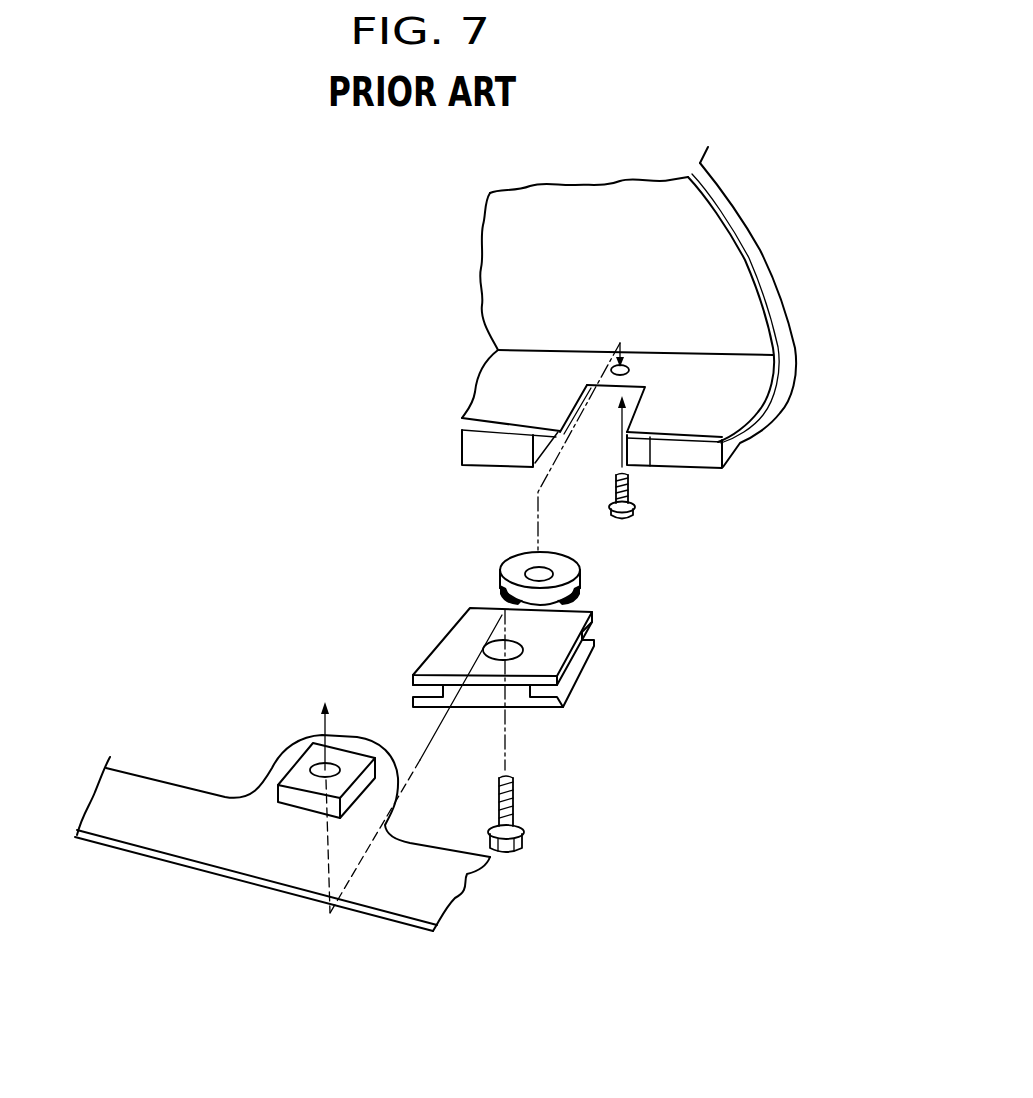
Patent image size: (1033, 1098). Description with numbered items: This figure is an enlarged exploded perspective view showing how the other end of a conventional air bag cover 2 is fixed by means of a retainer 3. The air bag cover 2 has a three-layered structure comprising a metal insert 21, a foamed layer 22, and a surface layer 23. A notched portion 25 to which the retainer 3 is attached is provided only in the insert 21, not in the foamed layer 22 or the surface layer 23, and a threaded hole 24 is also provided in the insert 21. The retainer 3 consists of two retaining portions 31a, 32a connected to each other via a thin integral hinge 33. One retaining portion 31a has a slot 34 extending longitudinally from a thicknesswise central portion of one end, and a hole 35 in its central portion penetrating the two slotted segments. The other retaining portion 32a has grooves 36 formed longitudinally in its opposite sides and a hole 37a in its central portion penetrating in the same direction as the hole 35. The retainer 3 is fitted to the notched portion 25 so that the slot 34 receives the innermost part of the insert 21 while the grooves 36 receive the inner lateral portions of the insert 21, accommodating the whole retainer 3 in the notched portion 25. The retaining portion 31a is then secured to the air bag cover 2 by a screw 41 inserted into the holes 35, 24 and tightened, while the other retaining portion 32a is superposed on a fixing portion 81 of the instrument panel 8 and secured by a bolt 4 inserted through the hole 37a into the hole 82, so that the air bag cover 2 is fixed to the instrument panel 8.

The air bag cover 2 is at (733, 177).
The metal insert 21 is at (460, 418).
The foamed layer 22 is at (462, 463).
The surface layer 23 is at (790, 378).
The threaded hole 24 is at (630, 372).
The notched portion 25 is at (603, 417).
The retainer 3 is at (544, 616).
The retaining portion 31a is at (571, 572).
The thin integral hinge 33 is at (505, 590).
The slot 34 is at (579, 597).
The hole 35 is at (528, 567).
The retaining portion 32a is at (455, 648).
The grooves 36 is at (568, 681).
The hole 37a is at (523, 649).
The bolt 4 is at (516, 800).
The screw 41 is at (634, 511).
The instrument panel 8 is at (467, 876).
The fixing portion 81 is at (300, 775).
The bolt hole 82 is at (331, 768).